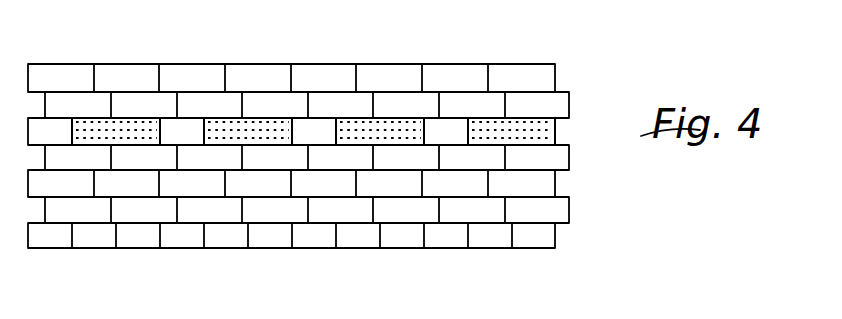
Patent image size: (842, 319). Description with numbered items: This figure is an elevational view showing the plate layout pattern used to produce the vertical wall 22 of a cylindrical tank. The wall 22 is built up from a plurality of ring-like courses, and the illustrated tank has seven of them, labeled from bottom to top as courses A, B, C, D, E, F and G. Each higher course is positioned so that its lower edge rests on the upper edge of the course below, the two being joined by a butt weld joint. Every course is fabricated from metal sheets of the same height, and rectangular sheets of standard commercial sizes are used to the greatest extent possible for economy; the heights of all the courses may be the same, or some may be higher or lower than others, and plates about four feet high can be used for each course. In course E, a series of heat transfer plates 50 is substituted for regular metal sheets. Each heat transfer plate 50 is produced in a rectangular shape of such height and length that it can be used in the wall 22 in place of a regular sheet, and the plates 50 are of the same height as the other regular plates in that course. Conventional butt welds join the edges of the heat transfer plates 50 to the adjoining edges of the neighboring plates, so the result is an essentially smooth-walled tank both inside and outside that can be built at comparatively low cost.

The wall 22 is at (268, 253).
The heat transfer plate 50 is at (213, 122).
The course A is at (540, 242).
The course B is at (557, 210).
The course C is at (537, 185).
The course D is at (560, 157).
The course E is at (555, 130).
The course F is at (560, 107).
The course G is at (540, 82).